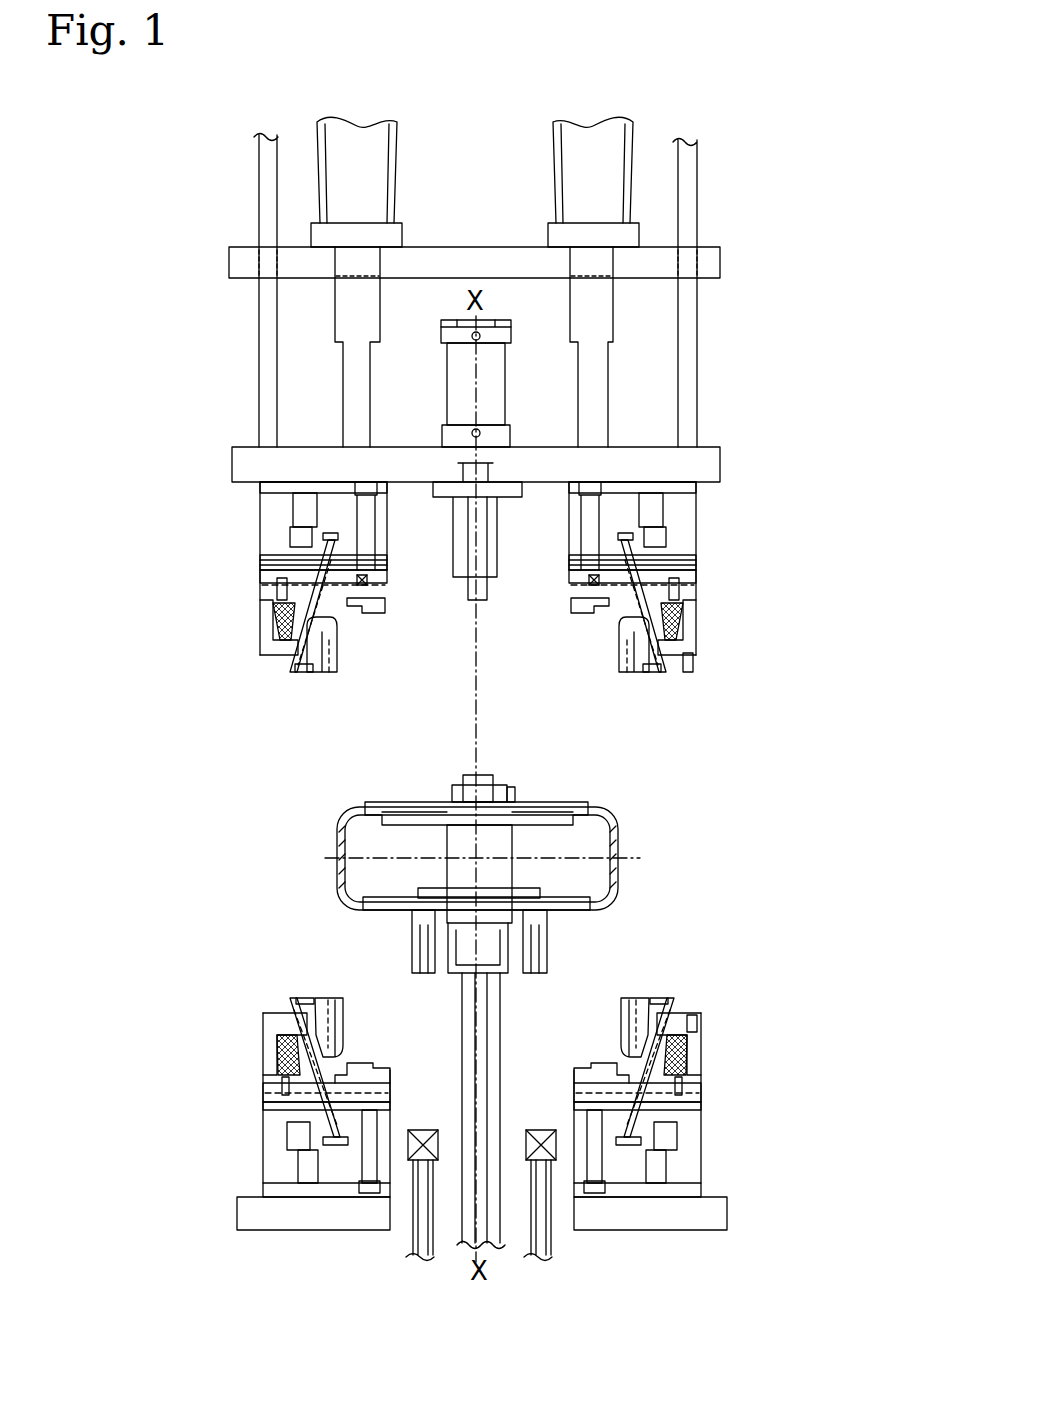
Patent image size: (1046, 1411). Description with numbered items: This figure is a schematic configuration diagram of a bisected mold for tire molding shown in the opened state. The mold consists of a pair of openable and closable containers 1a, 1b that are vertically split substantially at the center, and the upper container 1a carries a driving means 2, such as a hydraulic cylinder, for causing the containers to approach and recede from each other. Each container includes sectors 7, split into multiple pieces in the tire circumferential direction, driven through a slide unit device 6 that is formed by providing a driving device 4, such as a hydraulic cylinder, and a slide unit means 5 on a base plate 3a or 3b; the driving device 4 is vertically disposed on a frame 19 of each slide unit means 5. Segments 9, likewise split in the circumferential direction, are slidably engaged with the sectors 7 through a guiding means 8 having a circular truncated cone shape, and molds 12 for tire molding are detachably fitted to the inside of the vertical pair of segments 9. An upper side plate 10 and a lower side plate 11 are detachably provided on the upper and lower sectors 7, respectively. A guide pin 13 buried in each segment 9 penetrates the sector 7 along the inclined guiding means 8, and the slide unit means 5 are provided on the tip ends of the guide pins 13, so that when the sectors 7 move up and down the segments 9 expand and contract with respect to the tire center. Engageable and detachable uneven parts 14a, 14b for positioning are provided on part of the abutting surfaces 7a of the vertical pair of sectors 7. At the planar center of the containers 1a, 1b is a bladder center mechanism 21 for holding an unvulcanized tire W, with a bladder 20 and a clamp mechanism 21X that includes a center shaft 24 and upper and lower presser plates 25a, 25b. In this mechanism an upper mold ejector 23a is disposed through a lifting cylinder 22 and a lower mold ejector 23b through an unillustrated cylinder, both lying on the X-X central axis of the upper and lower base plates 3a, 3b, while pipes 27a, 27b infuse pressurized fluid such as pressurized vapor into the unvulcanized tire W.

The container 1a is at (708, 588).
The container 1b is at (712, 1113).
The driving means 2 is at (384, 125).
The base plate 3a is at (240, 464).
The base plate 3b is at (258, 1212).
The driving device 4 is at (300, 510).
The slide unit means 5 is at (285, 550).
The slide unit device 6 is at (280, 535).
The sector 7 is at (275, 622).
The abutting surface 7a is at (270, 658).
The guiding means 8 is at (300, 672).
The segment 9 is at (336, 640).
The upper side plate 10 is at (370, 600).
The lower side plate 11 is at (375, 1068).
The mold for tire molding 12 is at (336, 668).
The guide pin 13 is at (357, 552).
The uneven part for positioning 14a is at (694, 660).
The uneven part for positioning 14b is at (697, 1024).
The frame 19 is at (305, 490).
The bladder 20 is at (345, 878).
The bladder center mechanism 21 is at (447, 785).
The clamp mechanism 21X is at (512, 790).
The lifting cylinder 22 is at (447, 360).
The upper mold ejector 23a is at (474, 603).
The lower mold ejector 23b is at (466, 978).
The center shaft 24 is at (455, 840).
The upper presser plate 25a is at (430, 812).
The lower presser plate 25b is at (545, 906).
The pipe 27a is at (415, 1257).
The pipe 27b is at (548, 1257).
The unvulcanized tire W is at (616, 830).